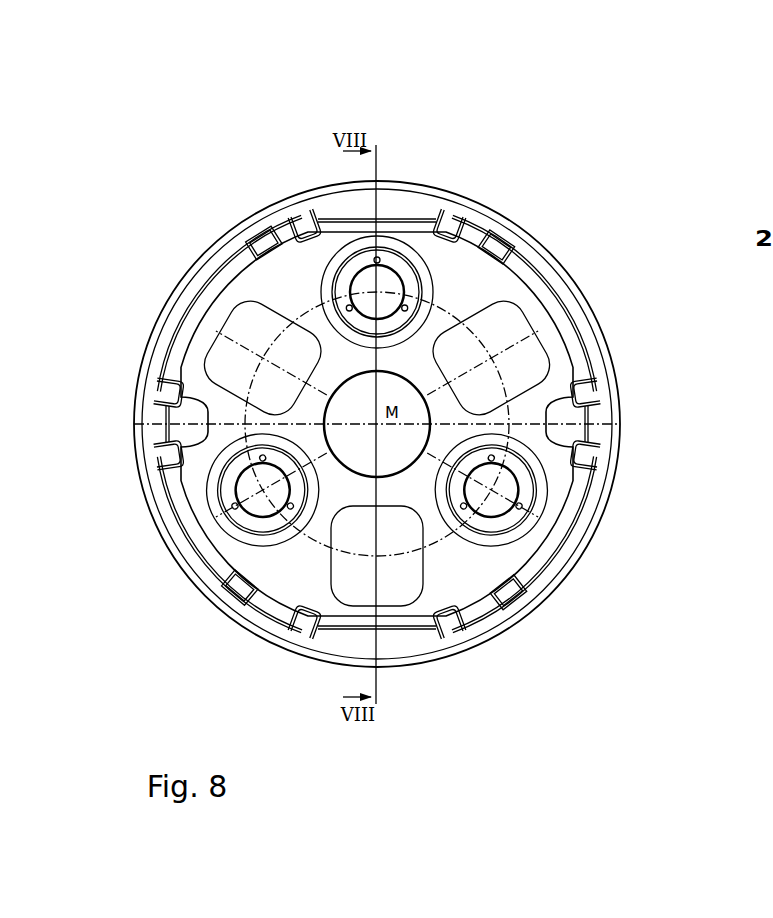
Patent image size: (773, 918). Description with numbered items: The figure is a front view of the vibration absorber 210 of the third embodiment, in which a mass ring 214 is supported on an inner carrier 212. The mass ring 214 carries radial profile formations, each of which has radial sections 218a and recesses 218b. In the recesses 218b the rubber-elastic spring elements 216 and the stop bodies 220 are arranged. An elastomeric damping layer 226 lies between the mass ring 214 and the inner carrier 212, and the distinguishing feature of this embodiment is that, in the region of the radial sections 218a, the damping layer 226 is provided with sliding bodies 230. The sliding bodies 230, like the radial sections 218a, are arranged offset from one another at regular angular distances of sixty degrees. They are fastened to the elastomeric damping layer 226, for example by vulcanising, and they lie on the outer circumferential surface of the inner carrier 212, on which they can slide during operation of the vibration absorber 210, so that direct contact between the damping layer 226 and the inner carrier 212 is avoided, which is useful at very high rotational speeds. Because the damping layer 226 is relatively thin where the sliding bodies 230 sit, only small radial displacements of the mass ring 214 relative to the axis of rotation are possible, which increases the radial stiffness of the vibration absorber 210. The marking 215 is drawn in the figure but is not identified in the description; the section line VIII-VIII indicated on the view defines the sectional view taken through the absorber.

The vibration absorber 210 is at (632, 130).
The inner carrier 212 is at (580, 372).
The mass ring 214 is at (580, 508).
The flat portion 215 is at (338, 222).
The rubber-elastic spring elements 216 is at (447, 225).
The radial sections 218a is at (388, 207).
The recesses 218b is at (513, 198).
The stop bodies 220 is at (288, 240).
The elastomeric damping layer 226 is at (532, 278).
The sliding bodies 230 is at (417, 213).